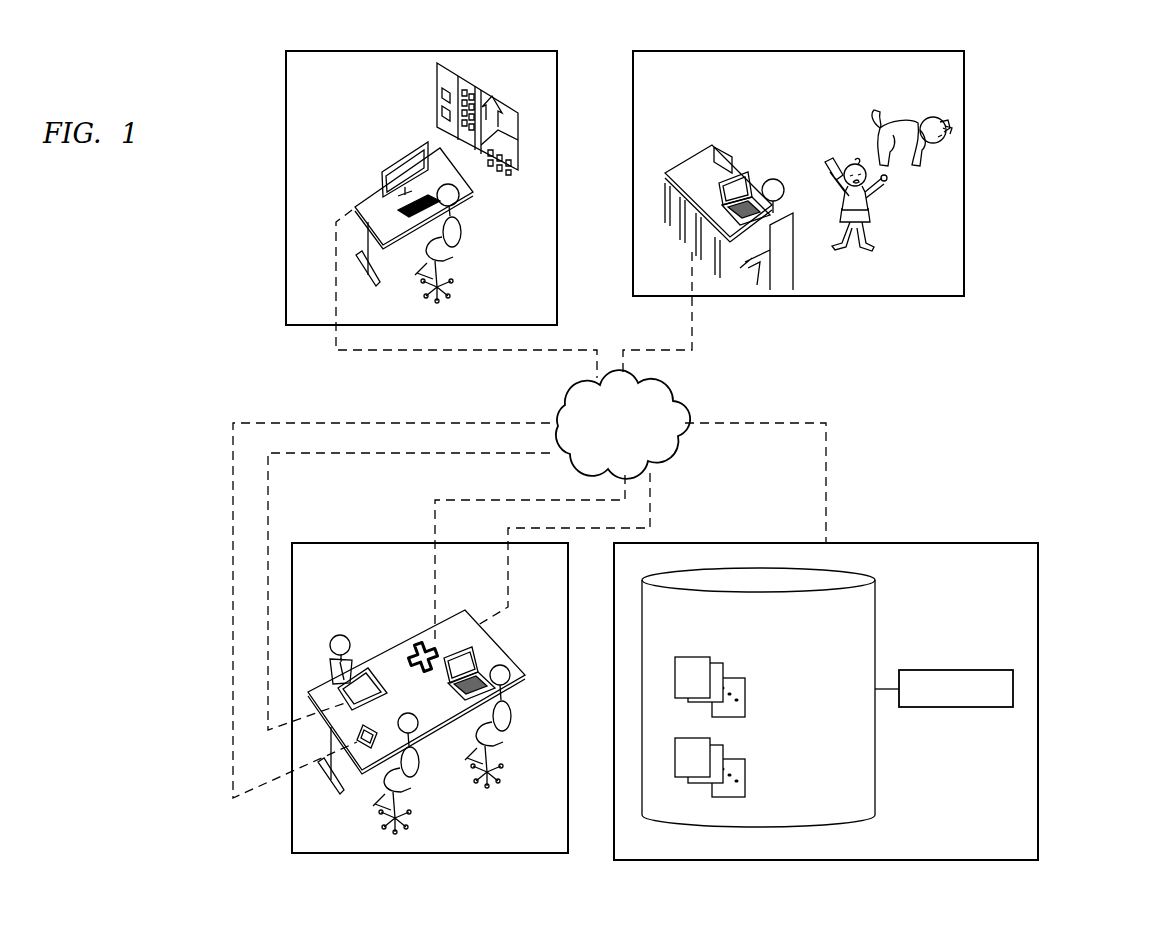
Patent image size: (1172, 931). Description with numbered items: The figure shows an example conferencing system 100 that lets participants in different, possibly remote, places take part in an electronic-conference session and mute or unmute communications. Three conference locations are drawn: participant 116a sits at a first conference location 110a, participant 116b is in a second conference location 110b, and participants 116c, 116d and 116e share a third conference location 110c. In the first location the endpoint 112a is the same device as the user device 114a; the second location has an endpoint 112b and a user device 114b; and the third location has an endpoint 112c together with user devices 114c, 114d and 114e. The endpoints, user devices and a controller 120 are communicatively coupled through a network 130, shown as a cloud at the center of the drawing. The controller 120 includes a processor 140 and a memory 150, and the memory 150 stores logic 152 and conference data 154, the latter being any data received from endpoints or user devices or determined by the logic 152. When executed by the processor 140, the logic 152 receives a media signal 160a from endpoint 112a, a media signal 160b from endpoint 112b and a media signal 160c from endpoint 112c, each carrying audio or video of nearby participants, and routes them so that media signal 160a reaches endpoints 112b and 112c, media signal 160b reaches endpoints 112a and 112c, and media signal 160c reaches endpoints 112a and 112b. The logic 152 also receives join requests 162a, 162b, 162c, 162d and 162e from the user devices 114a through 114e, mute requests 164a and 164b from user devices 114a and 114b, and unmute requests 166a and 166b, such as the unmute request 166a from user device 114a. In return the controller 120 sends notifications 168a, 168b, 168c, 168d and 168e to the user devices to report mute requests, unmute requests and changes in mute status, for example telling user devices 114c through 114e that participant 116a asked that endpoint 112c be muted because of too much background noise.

The conferencing system 100 is at (1062, 90).
The first conference location 110a is at (334, 77).
The second conference location 110b is at (690, 84).
The third conference location 110c is at (340, 568).
The endpoint 112a is at (376, 166).
The user device 114a is at (416, 147).
The participant 116a is at (466, 190).
The endpoint 112b is at (721, 165).
The user device 114b is at (745, 170).
The participant 116b is at (768, 180).
The endpoint 112c is at (423, 643).
The user device 114c is at (371, 668).
The participant 116c is at (341, 634).
The user device 114d is at (362, 750).
The participant 116d is at (404, 714).
The user device 114e is at (477, 652).
The participant 116e is at (506, 668).
The controller 120 is at (940, 597).
The network 130 is at (605, 446).
The processor 140 is at (967, 708).
The memory 150 is at (880, 761).
The logic 152 is at (723, 673).
The conference data 154 is at (723, 752).
The media signal 160a is at (470, 365).
The media signal 160b is at (448, 341).
The media signal 160c is at (448, 341).
The join request 162a is at (470, 365).
The join request 162b is at (646, 323).
The join request 162c is at (256, 702).
The join request 162d is at (221, 592).
The join request 162e is at (522, 554).
The mute request 164a is at (470, 365).
The mute request 164b is at (646, 323).
The unmute request 166a is at (358, 365).
The unmute request 166b is at (662, 346).
The notification 168a is at (360, 341).
The notification 168b is at (637, 362).
The notification 168c is at (276, 485).
The notification 168d is at (221, 485).
The notification 168e is at (495, 553).